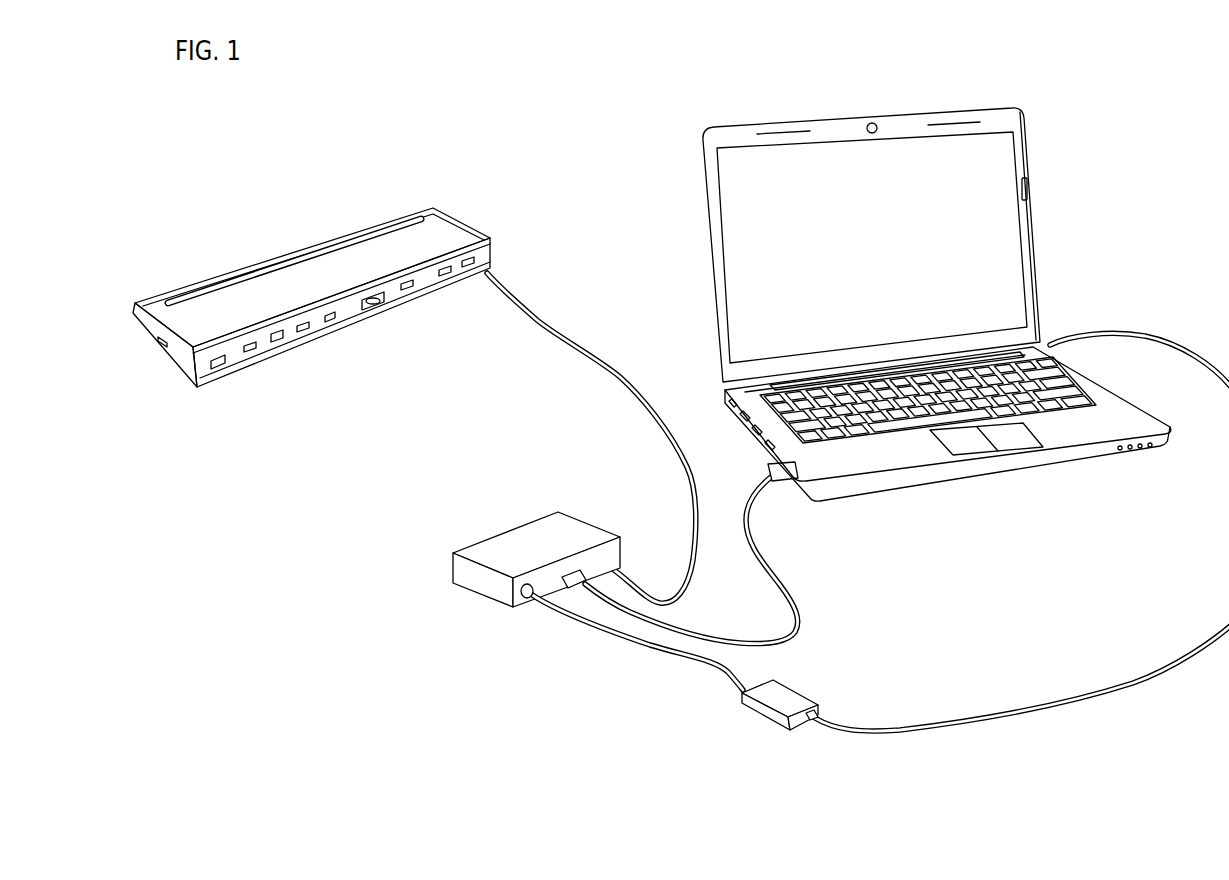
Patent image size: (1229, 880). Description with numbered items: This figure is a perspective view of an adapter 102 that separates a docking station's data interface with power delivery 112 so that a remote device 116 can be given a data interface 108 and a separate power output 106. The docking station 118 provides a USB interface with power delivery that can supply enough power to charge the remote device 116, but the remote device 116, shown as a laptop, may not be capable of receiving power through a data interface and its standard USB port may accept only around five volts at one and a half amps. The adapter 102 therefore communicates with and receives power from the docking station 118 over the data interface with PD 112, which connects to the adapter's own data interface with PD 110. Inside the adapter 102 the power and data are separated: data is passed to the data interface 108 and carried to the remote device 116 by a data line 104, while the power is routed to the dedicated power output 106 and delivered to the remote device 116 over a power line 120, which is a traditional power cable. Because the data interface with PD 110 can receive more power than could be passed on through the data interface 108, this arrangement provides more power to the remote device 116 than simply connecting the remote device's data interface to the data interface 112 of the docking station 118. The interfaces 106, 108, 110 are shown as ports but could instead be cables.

The adapter 102 is at (514, 508).
The data line 104 is at (795, 560).
The power output 106 is at (526, 612).
The data interface 108 is at (571, 597).
The data interface with PD 110 is at (608, 548).
The data interface with power delivery 112 is at (372, 279).
The remote device 116 is at (829, 112).
The docking station 118 is at (367, 223).
The power line 120 is at (1055, 715).